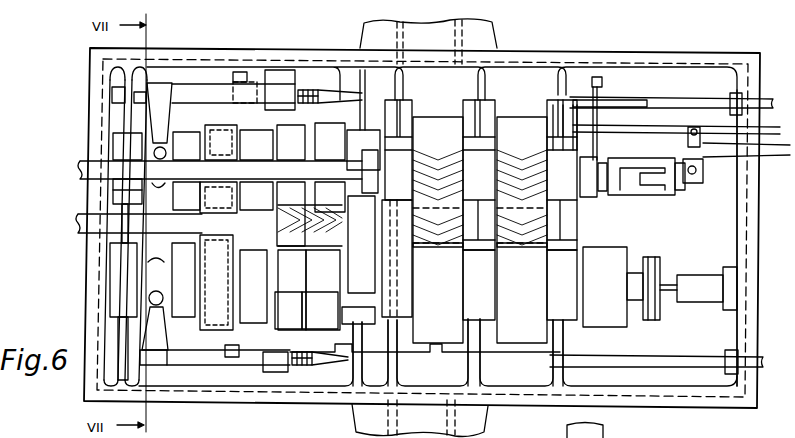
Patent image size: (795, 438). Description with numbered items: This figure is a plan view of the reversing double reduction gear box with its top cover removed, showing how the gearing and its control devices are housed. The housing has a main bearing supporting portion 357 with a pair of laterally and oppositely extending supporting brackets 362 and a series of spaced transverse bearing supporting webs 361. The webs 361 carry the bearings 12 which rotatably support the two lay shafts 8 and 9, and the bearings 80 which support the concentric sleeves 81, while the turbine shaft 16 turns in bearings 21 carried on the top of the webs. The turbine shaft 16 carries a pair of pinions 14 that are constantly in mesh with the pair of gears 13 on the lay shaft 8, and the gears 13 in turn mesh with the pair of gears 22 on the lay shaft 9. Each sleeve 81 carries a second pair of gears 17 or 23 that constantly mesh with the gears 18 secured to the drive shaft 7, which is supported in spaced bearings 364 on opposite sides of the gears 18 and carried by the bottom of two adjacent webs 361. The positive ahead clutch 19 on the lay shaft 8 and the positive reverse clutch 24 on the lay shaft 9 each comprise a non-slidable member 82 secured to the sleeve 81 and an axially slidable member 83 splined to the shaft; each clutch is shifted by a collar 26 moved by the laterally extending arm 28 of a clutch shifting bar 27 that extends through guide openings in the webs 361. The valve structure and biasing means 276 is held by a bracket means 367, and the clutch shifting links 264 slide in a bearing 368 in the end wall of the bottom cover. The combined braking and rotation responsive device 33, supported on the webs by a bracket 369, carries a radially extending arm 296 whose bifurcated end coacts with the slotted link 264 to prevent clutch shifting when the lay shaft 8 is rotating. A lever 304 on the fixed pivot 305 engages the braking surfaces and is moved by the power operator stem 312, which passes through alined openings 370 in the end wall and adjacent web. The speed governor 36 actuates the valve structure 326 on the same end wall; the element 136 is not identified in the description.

The drive shaft 7 is at (139, 223).
The lay shaft 8 is at (590, 197).
The lay shaft 9 is at (635, 275).
The bearings 12 is at (113, 190).
The gears 13 is at (480, 182).
The pinions 14 is at (412, 156).
The turbine shaft 16 is at (220, 170).
The gears 17 is at (311, 220).
The gears 18 is at (278, 185).
The positive ahead clutch 19 is at (217, 136).
The bearings 21 is at (481, 175).
The gears 22 is at (480, 293).
The gears 23 is at (306, 317).
The positive reverse clutch 24 is at (196, 343).
The shifting collar 26 is at (157, 226).
The clutch shifting bar 27 is at (234, 223).
The laterally extending arm 28 is at (173, 95).
The combined braking and rotation responsive device 33 is at (641, 169).
The speed governor 36 is at (605, 281).
The bearings 80 is at (304, 206).
The concentric sleeve 81 is at (311, 227).
The non-slidable clutch member 82 is at (218, 226).
The axially slidable clutch member 83 is at (184, 226).
The gear 136 is at (666, 286).
The link 264 is at (661, 226).
The valve structure and biasing means 276 is at (305, 86).
The radially extending arm 296 is at (600, 152).
The lever 304 is at (686, 139).
The fixed pivot 305 is at (705, 171).
The stem 312 is at (676, 125).
The valve structure 326 is at (698, 284).
The main bearing supporting portion 357 is at (750, 238).
The transverse bearing supporting webs 361 is at (145, 370).
The supporting brackets 362 is at (497, 45).
The bearings 364 is at (272, 228).
The bracket means 367 is at (227, 222).
The bearing 368 is at (722, 228).
The bracket 369 is at (635, 190).
The alined openings 370 is at (746, 150).